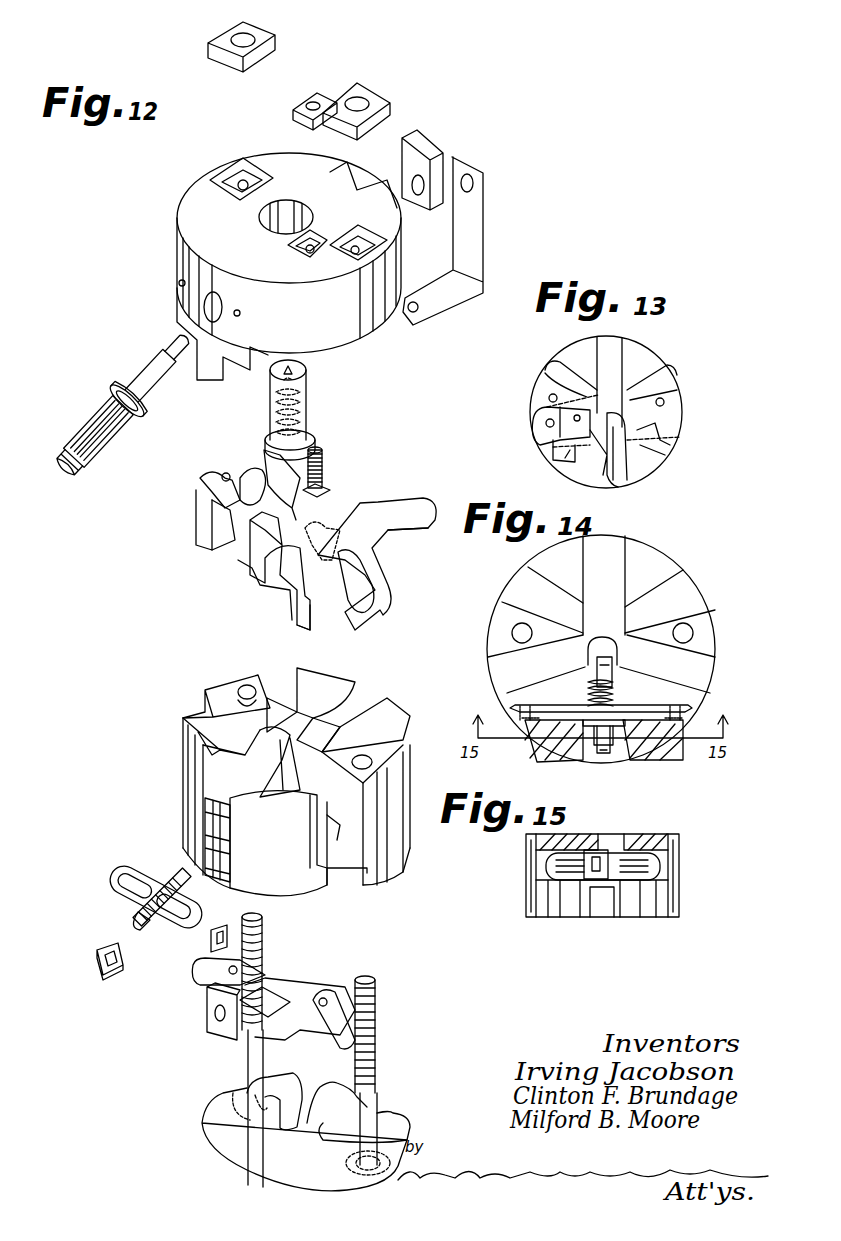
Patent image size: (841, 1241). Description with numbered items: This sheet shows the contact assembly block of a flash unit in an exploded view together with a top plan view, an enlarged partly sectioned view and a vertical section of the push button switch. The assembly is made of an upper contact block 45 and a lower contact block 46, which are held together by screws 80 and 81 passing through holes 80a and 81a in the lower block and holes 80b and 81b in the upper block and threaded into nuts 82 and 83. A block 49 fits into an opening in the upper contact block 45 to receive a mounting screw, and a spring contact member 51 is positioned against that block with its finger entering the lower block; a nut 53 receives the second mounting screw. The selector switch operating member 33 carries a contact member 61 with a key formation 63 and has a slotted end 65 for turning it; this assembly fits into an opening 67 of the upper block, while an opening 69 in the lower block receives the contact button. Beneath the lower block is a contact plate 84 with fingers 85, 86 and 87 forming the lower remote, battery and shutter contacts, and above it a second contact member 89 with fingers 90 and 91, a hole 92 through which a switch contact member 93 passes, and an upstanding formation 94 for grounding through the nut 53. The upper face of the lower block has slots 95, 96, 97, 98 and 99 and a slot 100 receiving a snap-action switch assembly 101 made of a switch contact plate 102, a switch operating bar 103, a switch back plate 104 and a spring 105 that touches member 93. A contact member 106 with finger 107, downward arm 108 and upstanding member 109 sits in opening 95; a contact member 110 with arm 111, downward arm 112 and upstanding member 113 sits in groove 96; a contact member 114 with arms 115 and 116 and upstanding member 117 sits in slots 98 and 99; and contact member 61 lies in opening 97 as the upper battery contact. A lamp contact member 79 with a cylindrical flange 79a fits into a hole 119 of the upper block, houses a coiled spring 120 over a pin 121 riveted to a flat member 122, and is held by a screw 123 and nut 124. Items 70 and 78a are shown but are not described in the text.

In FIG. 12, the selector switch operating member 33 is at (125, 413).
In FIG. 12, the upper contact block 45 is at (178, 214).
In FIG. 12, the lower contact block 46 is at (294, 772).
In FIG. 13, the lower contact block 46 is at (676, 412).
In FIG. 14, the lower contact block 46 is at (655, 570).
In FIG. 15, the lower contact block 46 is at (672, 895).
In FIG. 12, the block 49 is at (428, 146).
In FIG. 12, the spring contact member 51 is at (478, 228).
In FIG. 12, the nut 53 is at (211, 944).
In FIG. 12, the contact member 61 is at (178, 346).
In FIG. 12, the key formation 63 is at (150, 375).
In FIG. 12, the slotted end 65 is at (68, 464).
In FIG. 12, the opening 67 is at (222, 303).
In FIG. 12, the opening 69 is at (232, 830).
In FIG. 12, the flange 70 is at (127, 400).
In FIG. 12, the holes 78a is at (179, 285).
In FIG. 12, the contact member 79 is at (311, 408).
In FIG. 12, the cylindrical flange 79a is at (315, 437).
In FIG. 12, the screw 80 is at (378, 1003).
In FIG. 12, the hole 80a is at (372, 763).
In FIG. 14, the hole 80a is at (693, 633).
In FIG. 12, the hole 80b is at (357, 248).
In FIG. 12, the screw 81 is at (262, 945).
In FIG. 12, the hole 81a is at (247, 685).
In FIG. 14, the hole 81a is at (512, 632).
In FIG. 12, the hole 81b is at (244, 180).
In FIG. 12, the nut 82 is at (375, 103).
In FIG. 12, the nut 83 is at (268, 41).
In FIG. 12, the contact plate 84 is at (304, 1126).
In FIG. 12, the finger 85 is at (292, 1097).
In FIG. 12, the finger 86 is at (315, 1120).
In FIG. 12, the finger 87 is at (395, 1125).
In FIG. 12, the second contact member 89 is at (297, 1011).
In FIG. 12, the finger 90 is at (195, 976).
In FIG. 12, the finger 91 is at (330, 995).
In FIG. 12, the hole 92 is at (270, 998).
In FIG. 12, the switch contact member 93 is at (260, 1160).
In FIG. 14, the switch contact member 93 is at (615, 678).
In FIG. 12, the upstanding formation 94 is at (208, 1005).
In FIG. 12, the opening 95 is at (205, 698).
In FIG. 14, the opening 95 is at (507, 680).
In FIG. 12, the groove 96 is at (290, 682).
In FIG. 14, the groove 96 is at (520, 590).
In FIG. 12, the opening 97 is at (360, 707).
In FIG. 13, the opening 97 is at (618, 345).
In FIG. 14, the opening 97 is at (612, 545).
In FIG. 12, the opening 98 is at (404, 728).
In FIG. 14, the opening 98 is at (680, 595).
In FIG. 12, the opening 99 is at (333, 828).
In FIG. 14, the opening 99 is at (697, 690).
In FIG. 12, the slot 100 is at (190, 748).
In FIG. 12, the switch assembly 101 is at (122, 919).
In FIG. 12, the switch contact plate 102 is at (120, 880).
In FIG. 14, the switch contact plate 102 is at (650, 705).
In FIG. 15, the switch contact plate 102 is at (540, 878).
In FIG. 12, the switch operating bar 103 is at (142, 930).
In FIG. 14, the switch operating bar 103 is at (600, 752).
In FIG. 15, the switch operating bar 103 is at (602, 872).
In FIG. 12, the switch back plate 104 is at (105, 968).
In FIG. 14, the switch back plate 104 is at (613, 745).
In FIG. 15, the switch back plate 104 is at (612, 862).
In FIG. 12, the spring 105 is at (178, 868).
In FIG. 14, the spring 105 is at (592, 690).
In FIG. 12, the contact member 106 is at (206, 483).
In FIG. 13, the contact member 106 is at (540, 435).
In FIG. 12, the extending finger 107 is at (240, 512).
In FIG. 12, the downwardly extending arm 108 is at (196, 520).
In FIG. 14, the downwardly extending arm 108 is at (530, 748).
In FIG. 12, the upstanding member 109 is at (236, 468).
In FIG. 13, the upstanding member 109 is at (575, 460).
In FIG. 12, the contact member 110 is at (256, 568).
In FIG. 12, the contact arm 111 is at (262, 452).
In FIG. 13, the contact arm 111 is at (552, 365).
In FIG. 12, the downward extending arm 112 is at (297, 612).
In FIG. 14, the downward extending arm 112 is at (700, 710).
In FIG. 12, the upstanding member 113 is at (245, 553).
In FIG. 13, the upstanding member 113 is at (625, 483).
In FIG. 12, the contact member 114 is at (415, 493).
In FIG. 13, the contact member 114 is at (678, 437).
In FIG. 12, the arm 115 is at (396, 535).
In FIG. 13, the arm 115 is at (665, 376).
In FIG. 12, the second arm 116 is at (350, 605).
In FIG. 12, the upstanding member 117 is at (312, 520).
In FIG. 12, the hole 119 is at (290, 212).
In FIG. 12, the coiled spring 120 is at (310, 383).
In FIG. 12, the pin 121 is at (300, 415).
In FIG. 12, the flat member 122 is at (322, 486).
In FIG. 12, the screw 123 is at (323, 455).
In FIG. 12, the nut 124 is at (303, 105).